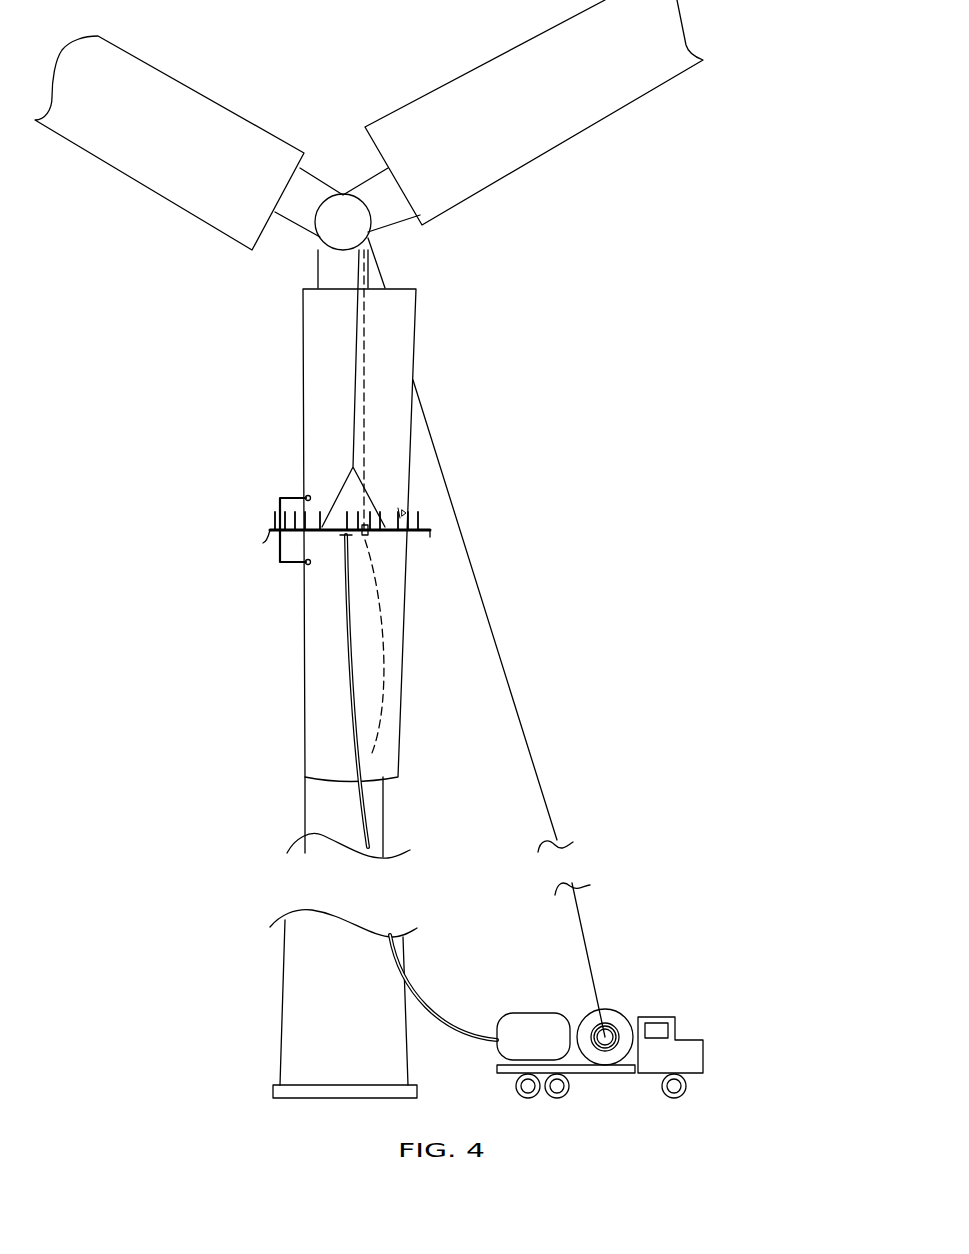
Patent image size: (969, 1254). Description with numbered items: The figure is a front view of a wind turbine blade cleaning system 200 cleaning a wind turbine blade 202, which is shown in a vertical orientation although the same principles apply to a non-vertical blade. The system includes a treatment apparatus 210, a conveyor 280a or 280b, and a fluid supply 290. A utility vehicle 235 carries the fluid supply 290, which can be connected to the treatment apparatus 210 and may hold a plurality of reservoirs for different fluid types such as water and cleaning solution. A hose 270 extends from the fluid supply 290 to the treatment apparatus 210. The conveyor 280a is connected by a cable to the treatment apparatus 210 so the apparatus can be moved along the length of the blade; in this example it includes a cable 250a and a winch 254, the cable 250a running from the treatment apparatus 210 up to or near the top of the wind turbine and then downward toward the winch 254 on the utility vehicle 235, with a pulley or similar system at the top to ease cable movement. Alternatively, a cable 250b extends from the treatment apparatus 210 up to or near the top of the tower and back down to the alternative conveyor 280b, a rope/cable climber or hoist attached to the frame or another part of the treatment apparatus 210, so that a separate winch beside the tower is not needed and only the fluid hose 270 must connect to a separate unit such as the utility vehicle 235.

The wind turbine blade cleaning system 200 is at (588, 297).
The wind turbine blade 202 is at (303, 332).
The treatment apparatus 210 is at (280, 500).
The utility vehicle 235 is at (705, 1038).
The cable 250a is at (510, 693).
The cable 250b is at (363, 433).
The winch 254 is at (637, 1010).
The hose 270 is at (417, 987).
The conveyor 280a is at (635, 868).
The conveyor 280b is at (365, 535).
The fluid supply 290 is at (527, 1012).